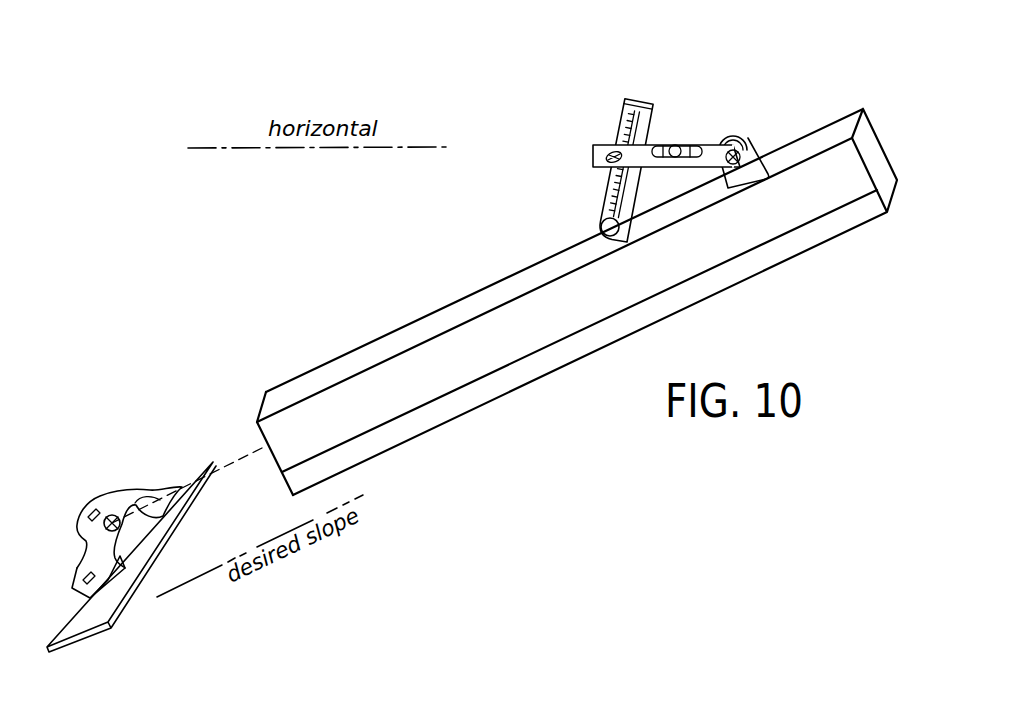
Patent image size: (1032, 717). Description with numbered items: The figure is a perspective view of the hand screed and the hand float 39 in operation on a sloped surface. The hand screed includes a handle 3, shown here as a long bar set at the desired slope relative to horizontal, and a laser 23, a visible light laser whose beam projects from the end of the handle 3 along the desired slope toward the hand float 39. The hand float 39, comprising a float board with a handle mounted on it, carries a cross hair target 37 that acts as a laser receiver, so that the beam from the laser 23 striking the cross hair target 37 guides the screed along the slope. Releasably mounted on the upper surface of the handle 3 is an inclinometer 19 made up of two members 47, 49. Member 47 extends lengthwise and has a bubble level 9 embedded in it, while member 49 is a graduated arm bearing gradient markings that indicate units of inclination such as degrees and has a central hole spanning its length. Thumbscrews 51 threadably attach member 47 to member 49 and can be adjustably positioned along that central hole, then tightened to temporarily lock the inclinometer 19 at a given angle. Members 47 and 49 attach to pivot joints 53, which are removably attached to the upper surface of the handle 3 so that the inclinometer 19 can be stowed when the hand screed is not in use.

The handle 3 is at (495, 325).
The bubble level 9 is at (685, 145).
The inclinometer 19 is at (563, 133).
The laser 23 is at (259, 446).
The cross hair target 37 is at (112, 514).
The hand float 39 is at (135, 467).
The member 47 is at (712, 143).
The member 49 is at (636, 98).
The thumbscrew 51 is at (601, 147).
The pivot joint 53 is at (630, 236).